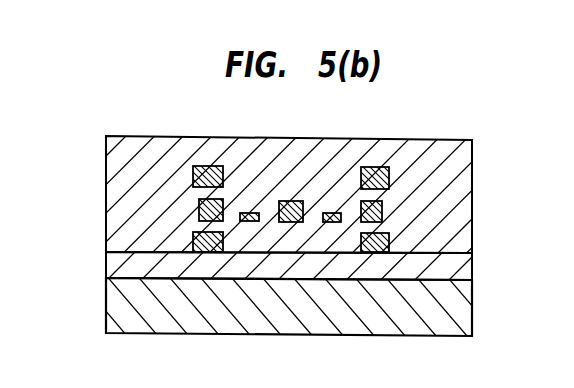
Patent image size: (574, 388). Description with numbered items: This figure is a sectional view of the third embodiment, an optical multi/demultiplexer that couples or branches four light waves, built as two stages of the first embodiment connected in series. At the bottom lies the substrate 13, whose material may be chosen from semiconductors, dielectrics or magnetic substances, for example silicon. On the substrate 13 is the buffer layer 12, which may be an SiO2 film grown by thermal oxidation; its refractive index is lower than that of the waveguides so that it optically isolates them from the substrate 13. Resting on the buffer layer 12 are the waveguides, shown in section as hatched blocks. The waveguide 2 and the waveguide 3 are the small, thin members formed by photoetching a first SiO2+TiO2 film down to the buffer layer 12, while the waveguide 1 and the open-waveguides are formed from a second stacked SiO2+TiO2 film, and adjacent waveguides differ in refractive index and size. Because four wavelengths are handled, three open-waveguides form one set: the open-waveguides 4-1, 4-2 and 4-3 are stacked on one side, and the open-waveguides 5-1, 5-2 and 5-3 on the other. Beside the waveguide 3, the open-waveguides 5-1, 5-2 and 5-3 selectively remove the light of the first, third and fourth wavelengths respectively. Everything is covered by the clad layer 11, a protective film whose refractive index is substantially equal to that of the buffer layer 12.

The waveguide 1 is at (291, 201).
The waveguide 2 is at (248, 213).
The waveguide 3 is at (332, 213).
The open-waveguide 4-1 is at (199, 166).
The open-waveguide 4-2 is at (199, 210).
The open-waveguide 4-3 is at (193, 244).
The open-waveguide 5-1 is at (370, 167).
The open-waveguide 5-2 is at (382, 208).
The open-waveguide 5-3 is at (390, 237).
The clad layer 11 is at (467, 198).
The buffer layer 12 is at (467, 266).
The substrate 13 is at (467, 312).